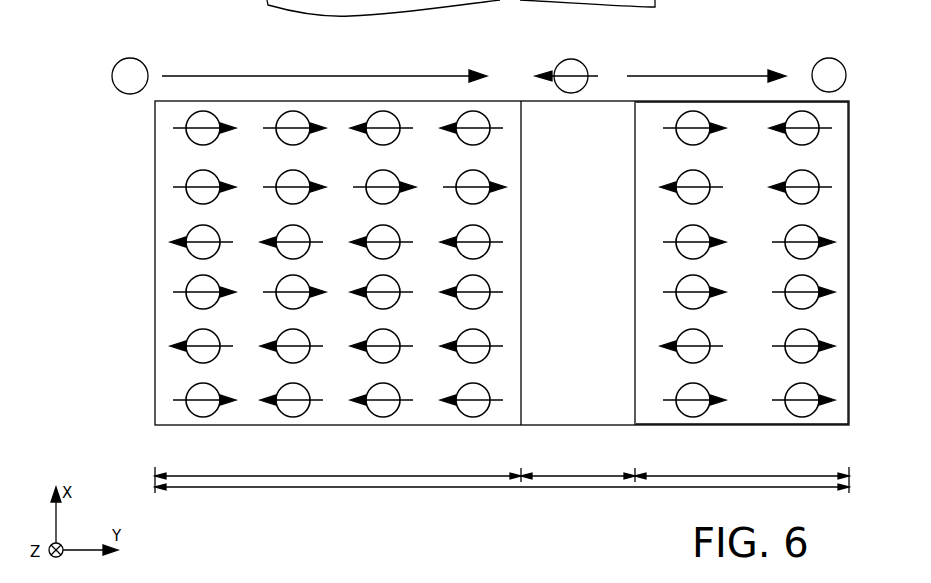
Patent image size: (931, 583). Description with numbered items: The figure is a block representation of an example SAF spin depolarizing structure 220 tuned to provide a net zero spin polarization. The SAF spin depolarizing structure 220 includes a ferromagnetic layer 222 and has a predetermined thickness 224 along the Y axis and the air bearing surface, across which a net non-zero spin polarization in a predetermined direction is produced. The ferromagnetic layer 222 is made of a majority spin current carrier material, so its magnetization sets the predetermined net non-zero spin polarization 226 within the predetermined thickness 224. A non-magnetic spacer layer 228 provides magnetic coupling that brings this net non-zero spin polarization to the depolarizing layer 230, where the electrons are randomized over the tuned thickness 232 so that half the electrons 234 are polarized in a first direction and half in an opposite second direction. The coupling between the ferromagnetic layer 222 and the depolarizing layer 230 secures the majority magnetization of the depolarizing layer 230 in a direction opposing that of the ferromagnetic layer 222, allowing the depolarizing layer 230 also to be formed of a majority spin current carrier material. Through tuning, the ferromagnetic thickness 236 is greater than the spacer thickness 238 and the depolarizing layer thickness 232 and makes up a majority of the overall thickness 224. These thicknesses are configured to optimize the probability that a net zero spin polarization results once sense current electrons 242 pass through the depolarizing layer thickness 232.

The SAF spin depolarizing structure 220 is at (136, 44).
The ferromagnetic layer 222 is at (153, 413).
The predetermined thickness 224 is at (502, 498).
The net non-zero spin polarization 226 is at (486, 358).
The non-magnetic spacer layer 228 is at (597, 125).
The depolarizing layer 230 is at (742, 278).
The tuned thickness 232 is at (742, 468).
The electrons 234 is at (693, 417).
The ferromagnetic thickness 236 is at (338, 466).
The spacer thickness 238 is at (578, 468).
The sense current electrons 242 is at (812, 64).